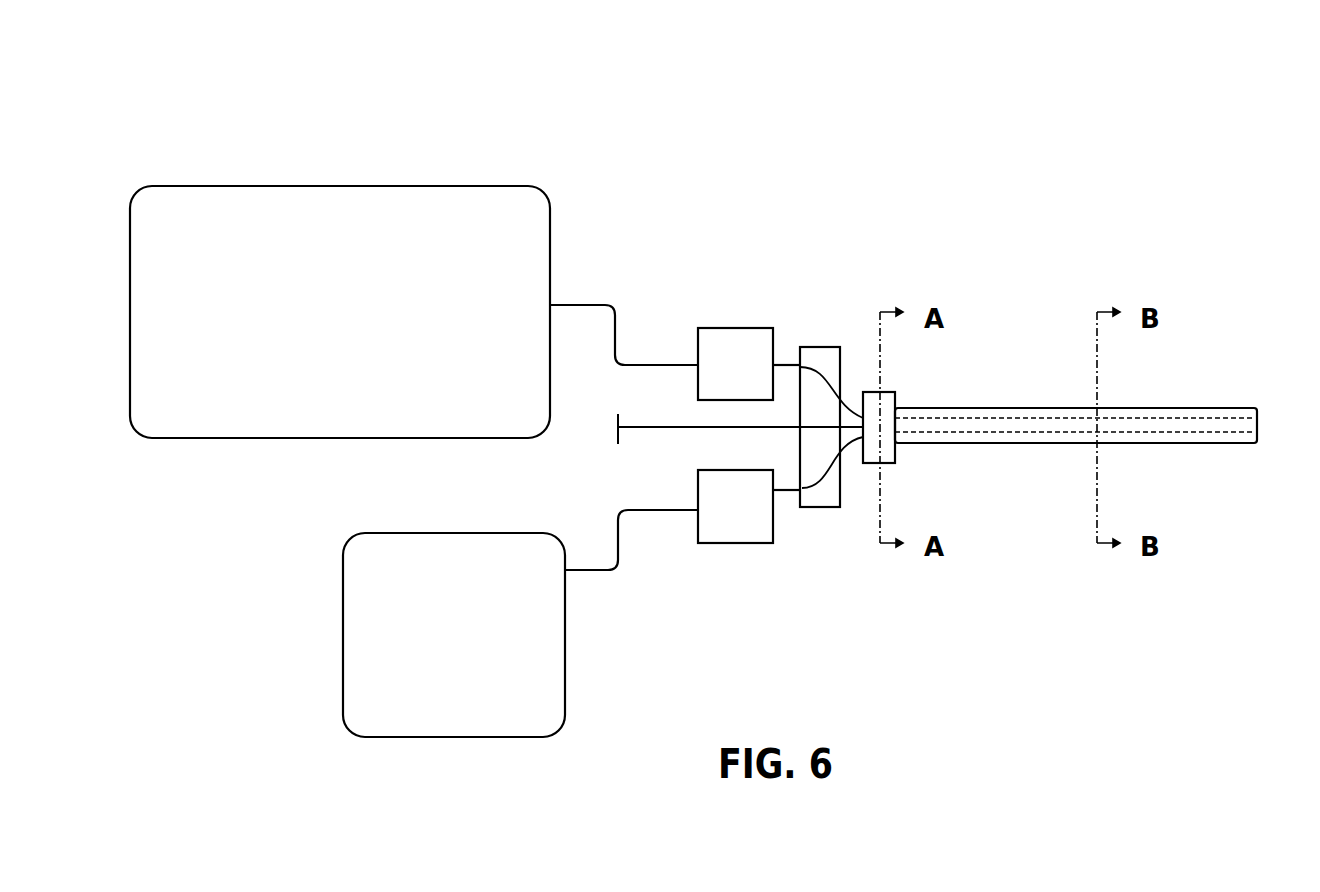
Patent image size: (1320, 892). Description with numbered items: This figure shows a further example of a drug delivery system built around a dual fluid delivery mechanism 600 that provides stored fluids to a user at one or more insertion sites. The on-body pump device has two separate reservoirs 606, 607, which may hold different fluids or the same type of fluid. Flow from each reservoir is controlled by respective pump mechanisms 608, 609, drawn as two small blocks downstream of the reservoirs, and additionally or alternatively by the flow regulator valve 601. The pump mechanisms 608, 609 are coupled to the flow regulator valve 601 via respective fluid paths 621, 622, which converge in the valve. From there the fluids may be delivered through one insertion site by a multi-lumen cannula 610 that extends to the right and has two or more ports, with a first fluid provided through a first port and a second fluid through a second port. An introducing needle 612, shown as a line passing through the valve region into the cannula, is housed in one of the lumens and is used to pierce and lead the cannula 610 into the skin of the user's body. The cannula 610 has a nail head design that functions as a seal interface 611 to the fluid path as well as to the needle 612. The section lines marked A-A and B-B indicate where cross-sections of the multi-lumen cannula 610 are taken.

The dual fluid delivery mechanism 600 is at (243, 103).
The reservoir 606 is at (428, 185).
The reservoir 607 is at (343, 588).
The pump mechanism 608 is at (745, 326).
The pump mechanism 609 is at (738, 545).
The flow regulator valve 601 is at (823, 345).
The fluid path 621 is at (825, 405).
The fluid path 622 is at (817, 470).
The introducing needle 612 is at (677, 427).
The seal interface 611 is at (887, 405).
The multi-lumen cannula 610 is at (1237, 408).